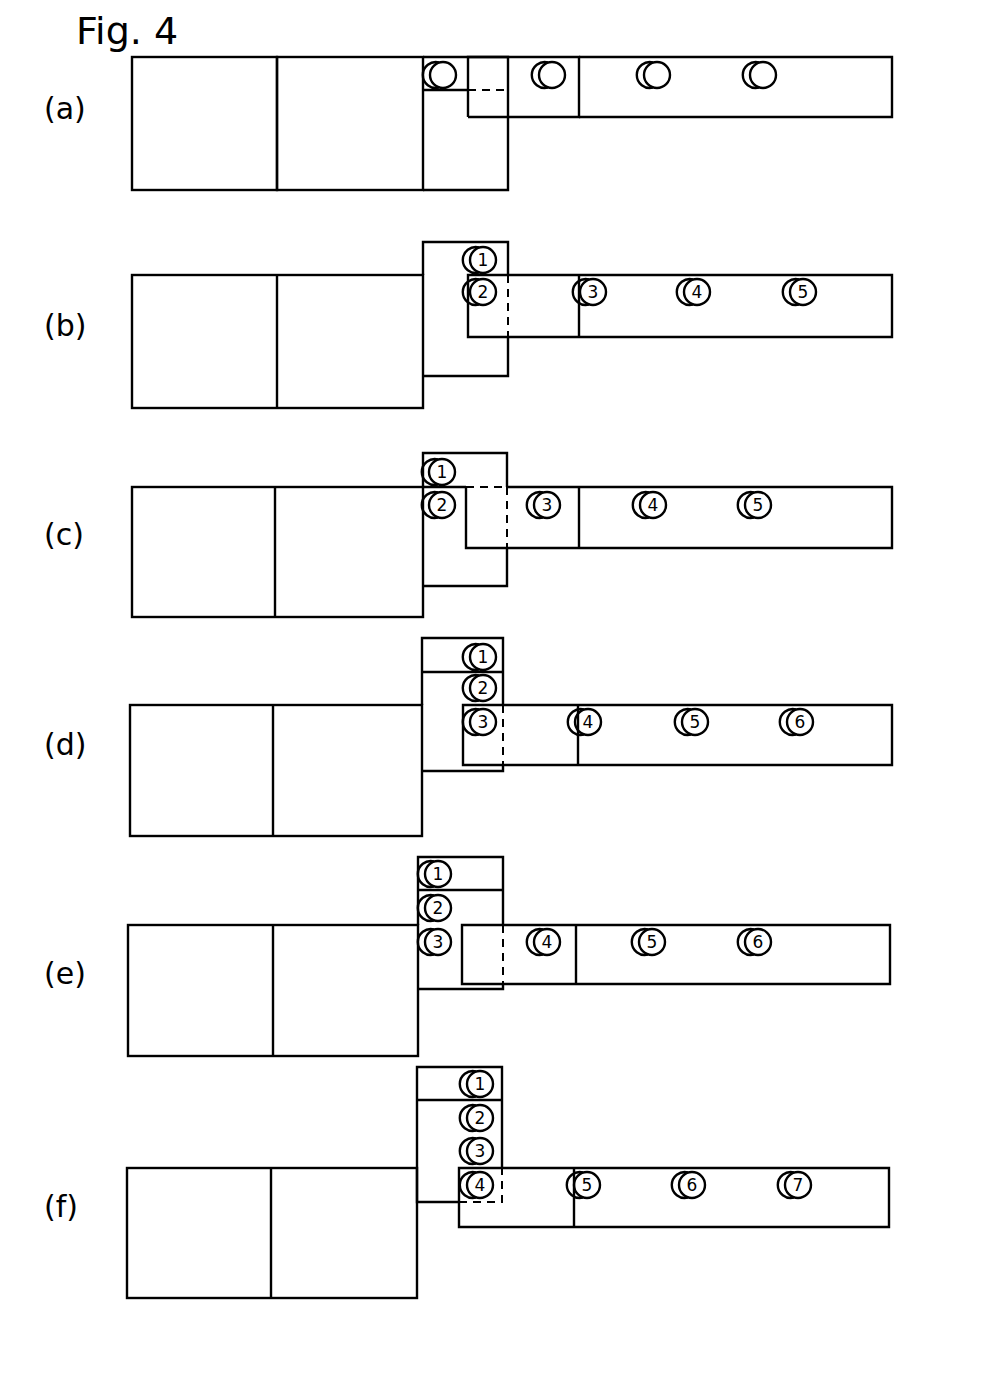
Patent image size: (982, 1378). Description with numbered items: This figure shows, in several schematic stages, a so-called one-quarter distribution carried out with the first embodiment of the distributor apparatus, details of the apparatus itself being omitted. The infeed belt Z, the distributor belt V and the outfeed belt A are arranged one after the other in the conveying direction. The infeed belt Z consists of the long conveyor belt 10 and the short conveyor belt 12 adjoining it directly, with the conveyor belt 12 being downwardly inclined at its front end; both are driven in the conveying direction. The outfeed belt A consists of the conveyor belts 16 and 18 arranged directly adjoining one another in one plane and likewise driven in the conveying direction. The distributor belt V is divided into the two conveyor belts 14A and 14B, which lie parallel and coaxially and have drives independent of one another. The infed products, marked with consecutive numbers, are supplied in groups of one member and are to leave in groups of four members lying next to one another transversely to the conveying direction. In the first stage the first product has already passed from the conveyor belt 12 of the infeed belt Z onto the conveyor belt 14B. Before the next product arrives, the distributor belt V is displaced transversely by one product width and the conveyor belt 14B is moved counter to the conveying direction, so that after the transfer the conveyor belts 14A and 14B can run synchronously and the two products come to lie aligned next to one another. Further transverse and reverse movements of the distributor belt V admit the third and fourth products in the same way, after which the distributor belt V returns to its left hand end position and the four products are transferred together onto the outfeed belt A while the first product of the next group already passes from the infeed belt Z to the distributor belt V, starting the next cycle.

The conveyor belt 10 is at (724, 101).
The conveyor belt 12 is at (562, 103).
The conveyor belt 14A is at (494, 170).
The conveyor belt 14B is at (464, 78).
The conveyor belt 16 is at (353, 169).
The conveyor belt 18 is at (225, 169).
The outfeed belt A is at (274, 56).
The distributor belt V is at (452, 56).
The infeed belt Z is at (669, 57).